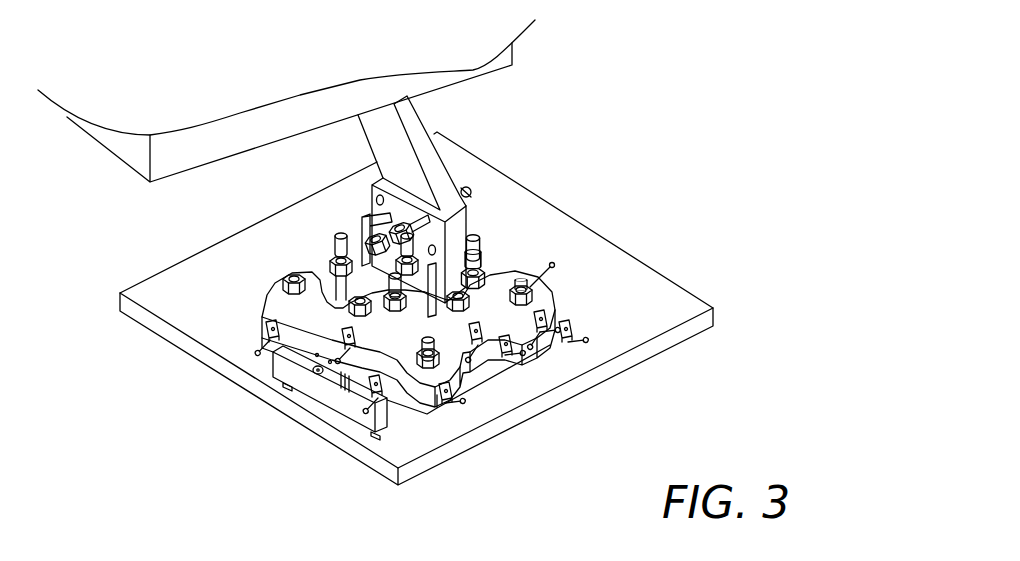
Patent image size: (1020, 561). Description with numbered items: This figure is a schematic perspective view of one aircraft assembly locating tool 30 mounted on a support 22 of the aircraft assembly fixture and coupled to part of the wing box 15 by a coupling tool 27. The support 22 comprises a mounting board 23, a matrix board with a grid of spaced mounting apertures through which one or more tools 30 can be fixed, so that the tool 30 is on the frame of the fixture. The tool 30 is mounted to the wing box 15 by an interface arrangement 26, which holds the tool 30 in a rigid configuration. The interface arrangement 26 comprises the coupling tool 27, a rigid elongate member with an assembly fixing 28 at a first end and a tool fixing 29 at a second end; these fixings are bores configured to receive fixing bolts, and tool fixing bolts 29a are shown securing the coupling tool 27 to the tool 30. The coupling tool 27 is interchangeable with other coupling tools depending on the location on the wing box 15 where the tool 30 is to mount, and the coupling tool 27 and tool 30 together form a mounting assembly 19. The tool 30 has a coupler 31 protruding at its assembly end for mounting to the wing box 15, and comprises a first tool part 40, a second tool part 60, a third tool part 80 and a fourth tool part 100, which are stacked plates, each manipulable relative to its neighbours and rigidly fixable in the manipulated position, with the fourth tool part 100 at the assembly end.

The wing box 15 is at (232, 138).
The mounting assembly 19 is at (624, 57).
The support 22 is at (217, 343).
The mounting board 23 is at (183, 272).
The interface arrangement 26 is at (533, 88).
The coupling tool 27 is at (387, 157).
The assembly fixing 28 is at (407, 107).
The tool fixing 29 is at (480, 160).
The tool fixing bolt 29a is at (469, 188).
The aircraft assembly locating tool 30 is at (726, 140).
The coupler 31 is at (472, 240).
The first tool part 40 is at (560, 308).
The second tool part 60 is at (537, 283).
The third tool part 80 is at (273, 312).
The fourth tool part 100 is at (293, 272).